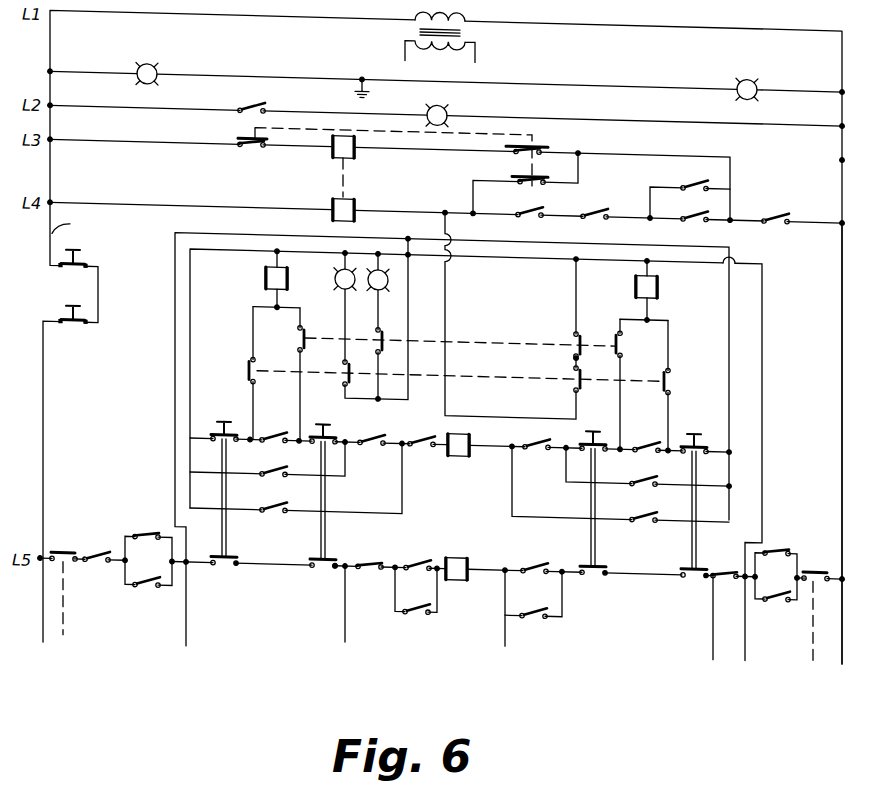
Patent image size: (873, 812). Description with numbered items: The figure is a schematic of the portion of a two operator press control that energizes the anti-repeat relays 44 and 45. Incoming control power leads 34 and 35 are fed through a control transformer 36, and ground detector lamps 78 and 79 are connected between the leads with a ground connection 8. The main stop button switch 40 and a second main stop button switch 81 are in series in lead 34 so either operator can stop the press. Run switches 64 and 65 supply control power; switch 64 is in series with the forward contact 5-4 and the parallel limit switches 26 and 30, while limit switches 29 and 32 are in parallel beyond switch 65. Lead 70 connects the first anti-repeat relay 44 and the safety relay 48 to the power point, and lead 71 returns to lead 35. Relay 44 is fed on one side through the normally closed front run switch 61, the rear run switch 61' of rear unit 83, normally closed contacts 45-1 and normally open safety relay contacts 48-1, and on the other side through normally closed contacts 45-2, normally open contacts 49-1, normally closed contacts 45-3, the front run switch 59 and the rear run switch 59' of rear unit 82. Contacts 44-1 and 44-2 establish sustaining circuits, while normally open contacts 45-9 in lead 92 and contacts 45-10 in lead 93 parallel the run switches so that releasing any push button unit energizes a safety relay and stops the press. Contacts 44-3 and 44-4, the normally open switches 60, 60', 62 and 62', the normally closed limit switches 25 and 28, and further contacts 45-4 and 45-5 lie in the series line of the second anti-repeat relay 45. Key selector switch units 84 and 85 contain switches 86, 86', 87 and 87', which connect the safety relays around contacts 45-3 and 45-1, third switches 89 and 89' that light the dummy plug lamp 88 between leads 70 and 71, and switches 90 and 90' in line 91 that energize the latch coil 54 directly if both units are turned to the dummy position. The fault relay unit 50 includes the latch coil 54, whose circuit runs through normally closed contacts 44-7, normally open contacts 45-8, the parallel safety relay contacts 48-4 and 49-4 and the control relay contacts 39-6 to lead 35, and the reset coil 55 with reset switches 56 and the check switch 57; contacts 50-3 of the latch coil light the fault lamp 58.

The ground detector lamp 78 is at (167, 48).
The control transformer 36 is at (408, 24).
The ground 8 is at (356, 84).
The contacts 50-3 is at (258, 96).
The fault lamp 58 is at (448, 98).
The ground detector lamp 79 is at (768, 50).
The trip or reset coil 55 is at (357, 133).
The reset switches 56 is at (248, 144).
The fault relay unit 50 is at (352, 175).
The trigger or latching coil 54 is at (330, 192).
The check switch 57 is at (527, 172).
The normally closed contacts 44-7 is at (526, 205).
The normally open contacts 45-8 is at (602, 185).
The safety relay contacts 48-4 is at (703, 163).
The safety relay contacts 49-4 is at (705, 220).
The control relay contacts 39-6 is at (792, 188).
The incoming control power lead 34 is at (69, 234).
The second main stop button switch 81 is at (78, 262).
The main stop button switch 40 is at (70, 322).
The incoming control power lead 35 is at (840, 264).
The lead 70 is at (174, 320).
The lead 71 is at (762, 408).
The safety relay 48 is at (263, 270).
The first switch 86 is at (229, 372).
The first switch 86' is at (283, 374).
The dummy plug lamp 88 is at (334, 276).
The third switch 89 is at (326, 378).
The third switch 89' is at (364, 357).
The line 91 is at (406, 388).
The key operated selector switch unit 84 is at (450, 370).
The key operated selector switch unit 85 is at (486, 330).
The fourth switch 90 is at (557, 378).
The fourth switch 90' is at (560, 335).
The second switch 87 is at (684, 385).
The second switch 87' is at (636, 384).
The normally closed switch 59 is at (220, 477).
The normally closed contacts 45-3 is at (284, 416).
The normally closed switch 59' is at (332, 423).
The rear run push button switch unit 82 is at (327, 530).
The normally open contacts 49-1 is at (368, 424).
The normally closed contacts 45-2 is at (420, 440).
The first anti-repeat relay 44 is at (471, 425).
The normally open contacts 48-1 is at (540, 438).
The normally closed switch 61' is at (591, 428).
The rear run push button switch unit 83 is at (590, 536).
The normally closed contacts 45-1 is at (655, 415).
The normally closed run switch 61 is at (695, 489).
The lead 92 is at (330, 470).
The normally open contacts 45-9 is at (276, 458).
The normally open contacts 44-1 is at (276, 494).
The contacts 45-10 is at (642, 470).
The lead 93 is at (580, 480).
The contacts 44-2 is at (644, 508).
The run switch 64 is at (70, 542).
The forward contact 5-4 is at (97, 562).
The limit switch 26 is at (148, 530).
The limit switch 30 is at (144, 586).
The normally open switch 60 is at (224, 580).
The normally open switch 60' is at (314, 581).
The normally closed limit switch 25 is at (368, 553).
The normally open contacts 44-3 is at (440, 536).
The second anti-repeat relay 45 is at (462, 546).
The normally open contacts 44-4 is at (540, 548).
The normally open switch 62' is at (596, 592).
The normally open switch 62 is at (688, 589).
The normally closed limit switch 28 is at (724, 560).
The limit switch 32 is at (786, 516).
The limit switch 29 is at (778, 584).
The run switch 65 is at (818, 548).
The relay contact 45-4 is at (418, 604).
The relay contact 45-5 is at (534, 606).